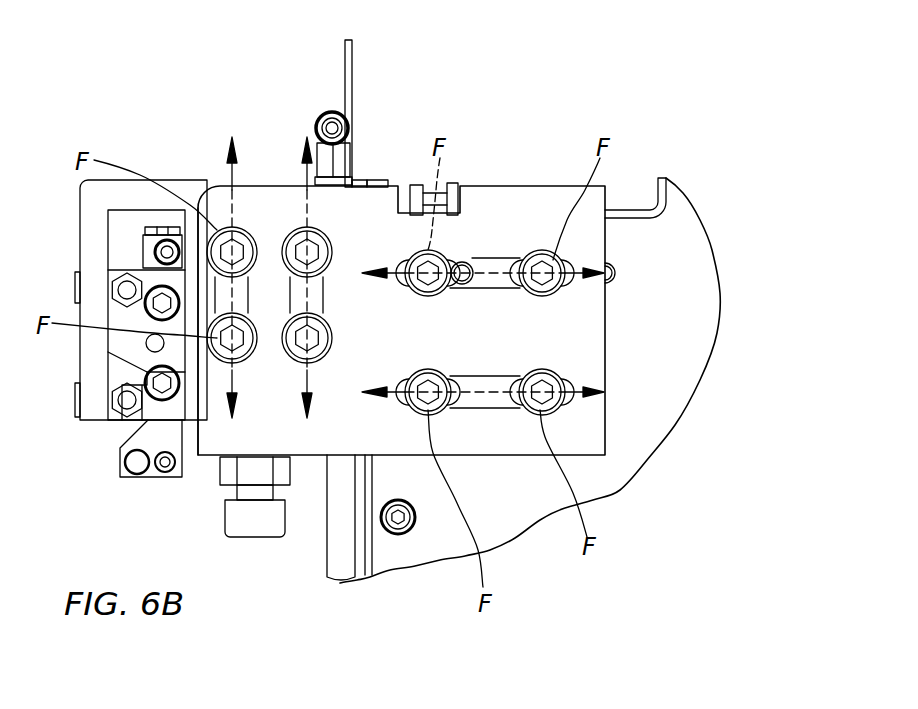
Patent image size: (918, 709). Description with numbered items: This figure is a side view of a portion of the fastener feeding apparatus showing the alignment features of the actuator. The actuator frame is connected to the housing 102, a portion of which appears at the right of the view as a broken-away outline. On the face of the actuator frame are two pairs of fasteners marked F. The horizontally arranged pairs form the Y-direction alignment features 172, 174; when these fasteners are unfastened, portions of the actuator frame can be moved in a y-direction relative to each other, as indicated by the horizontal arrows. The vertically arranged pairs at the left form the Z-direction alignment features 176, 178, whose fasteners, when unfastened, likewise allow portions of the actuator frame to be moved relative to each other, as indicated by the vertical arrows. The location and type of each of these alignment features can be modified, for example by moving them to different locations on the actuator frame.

The housing 102 is at (683, 220).
The Y-direction alignment feature 172 is at (492, 273).
The Y-direction alignment feature 174 is at (480, 410).
The Z-direction alignment feature 176 is at (227, 168).
The Z-direction alignment feature 178 is at (303, 167).